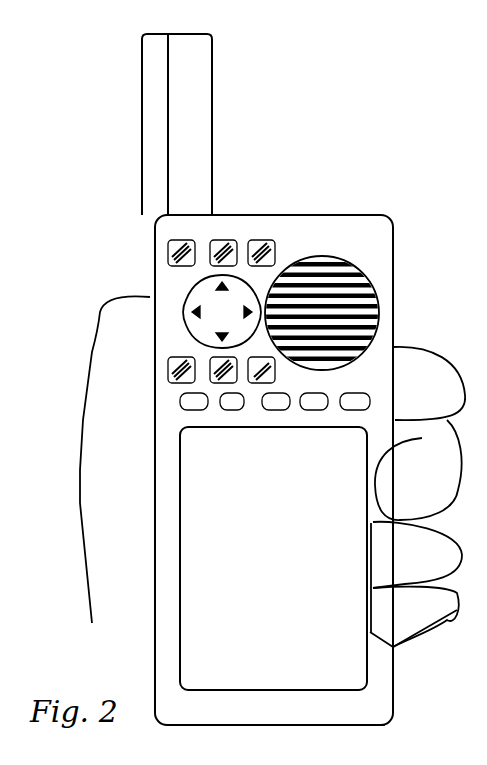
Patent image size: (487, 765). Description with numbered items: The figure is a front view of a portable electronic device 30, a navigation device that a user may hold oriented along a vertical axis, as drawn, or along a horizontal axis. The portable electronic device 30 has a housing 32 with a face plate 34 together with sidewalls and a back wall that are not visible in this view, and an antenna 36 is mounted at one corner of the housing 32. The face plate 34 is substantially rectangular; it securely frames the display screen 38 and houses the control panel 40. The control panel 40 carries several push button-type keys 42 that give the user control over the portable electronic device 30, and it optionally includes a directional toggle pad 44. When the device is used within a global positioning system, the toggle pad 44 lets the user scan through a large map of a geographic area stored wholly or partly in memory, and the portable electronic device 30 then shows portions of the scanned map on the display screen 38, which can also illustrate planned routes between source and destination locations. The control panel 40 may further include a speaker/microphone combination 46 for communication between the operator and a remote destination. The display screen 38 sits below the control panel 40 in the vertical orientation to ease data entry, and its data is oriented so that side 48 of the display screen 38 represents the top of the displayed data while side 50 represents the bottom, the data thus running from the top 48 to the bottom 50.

The portable electronic device 30 is at (280, 130).
The housing 32 is at (367, 207).
The face plate 34 is at (347, 720).
The antenna 36 is at (195, 90).
The display screen 38 is at (232, 617).
The control panel 40 is at (413, 252).
The push button-type keys 42 is at (183, 240).
The directional toggle pad 44 is at (213, 296).
The speaker/microphone combination 46 is at (323, 272).
The side of the display screen 48 is at (290, 428).
The side of the display screen 50 is at (255, 688).